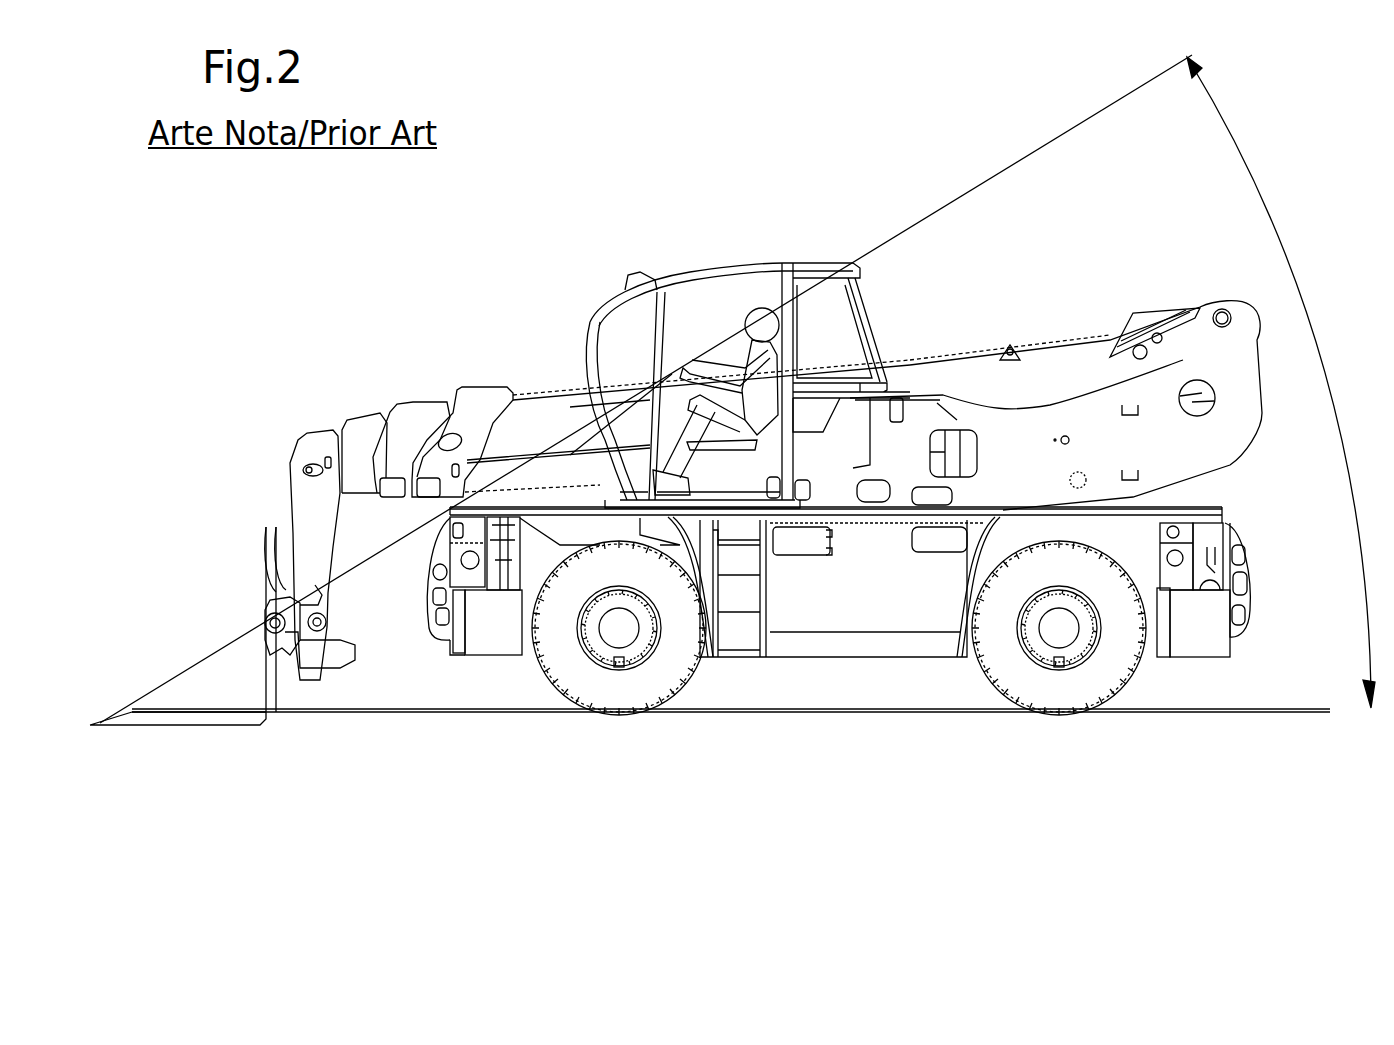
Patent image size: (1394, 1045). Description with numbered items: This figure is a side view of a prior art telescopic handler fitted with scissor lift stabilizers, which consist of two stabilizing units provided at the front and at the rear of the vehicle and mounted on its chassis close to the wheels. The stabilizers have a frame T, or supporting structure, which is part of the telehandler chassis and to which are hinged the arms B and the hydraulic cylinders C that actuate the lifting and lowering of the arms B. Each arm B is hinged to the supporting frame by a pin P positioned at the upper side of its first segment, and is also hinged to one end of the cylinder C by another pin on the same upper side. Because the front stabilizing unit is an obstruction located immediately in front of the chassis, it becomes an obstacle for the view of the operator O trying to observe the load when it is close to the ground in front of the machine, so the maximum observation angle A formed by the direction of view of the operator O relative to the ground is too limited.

The frame T is at (440, 557).
The operator O is at (753, 367).
The maximum observation angle A is at (1307, 312).
The arm B is at (437, 668).
The pin P is at (495, 630).
The hydraulic cylinder C is at (510, 572).